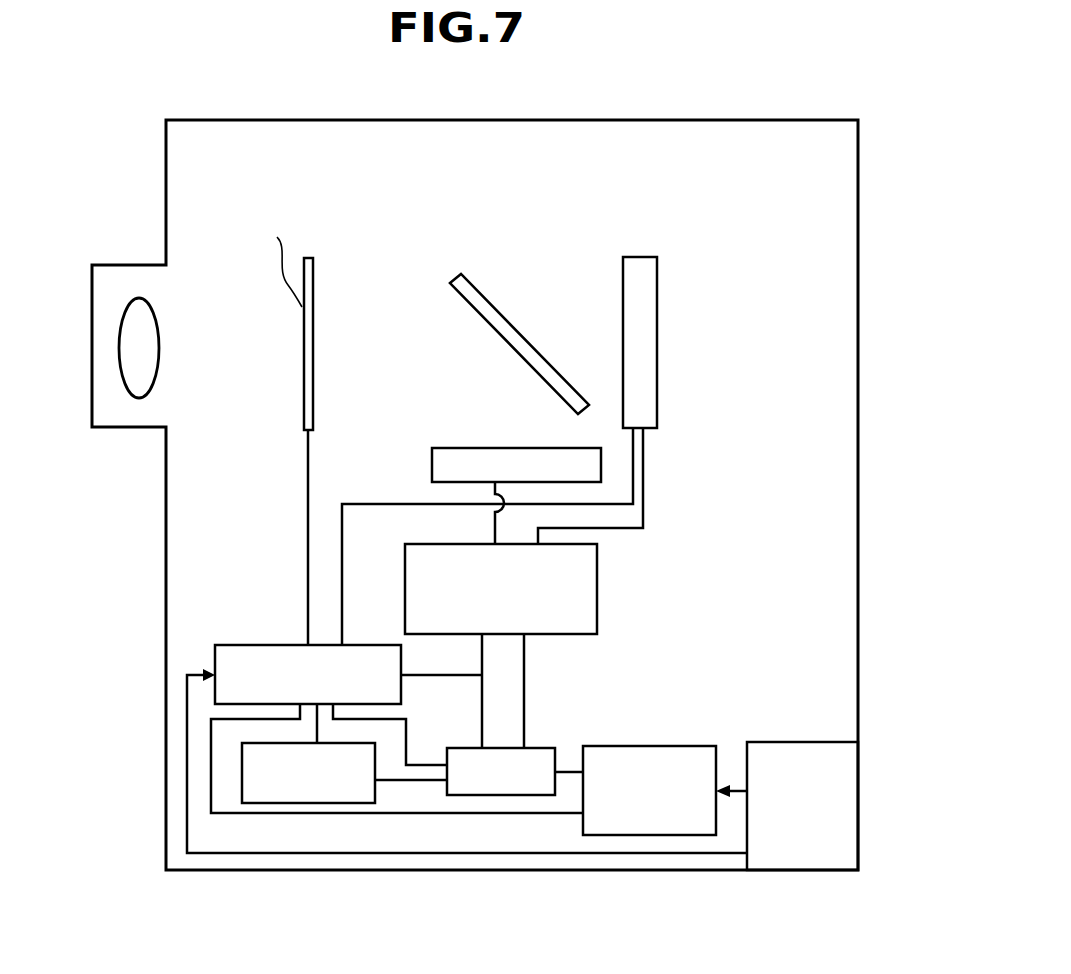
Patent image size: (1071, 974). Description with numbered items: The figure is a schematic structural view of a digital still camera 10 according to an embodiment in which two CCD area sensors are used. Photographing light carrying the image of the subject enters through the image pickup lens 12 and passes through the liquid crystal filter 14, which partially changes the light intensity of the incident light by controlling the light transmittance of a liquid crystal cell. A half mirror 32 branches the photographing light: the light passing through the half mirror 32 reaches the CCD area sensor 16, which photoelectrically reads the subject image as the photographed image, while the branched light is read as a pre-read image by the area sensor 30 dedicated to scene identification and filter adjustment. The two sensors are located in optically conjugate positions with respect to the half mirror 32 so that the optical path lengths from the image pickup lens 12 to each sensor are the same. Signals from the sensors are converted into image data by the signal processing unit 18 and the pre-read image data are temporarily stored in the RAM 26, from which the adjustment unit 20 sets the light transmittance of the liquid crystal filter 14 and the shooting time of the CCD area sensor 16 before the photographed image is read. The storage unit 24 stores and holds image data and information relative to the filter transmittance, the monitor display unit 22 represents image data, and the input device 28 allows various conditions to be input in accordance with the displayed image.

The digital camera 10 is at (134, 160).
The image pickup lens 12 is at (126, 299).
The liquid crystal filter 14 is at (313, 262).
The CCD area sensor 16 is at (657, 288).
The signal processing unit 18 is at (600, 587).
The adjustment unit 20 is at (259, 645).
The monitor display unit 22 is at (667, 745).
The storage unit 24 is at (288, 803).
The RAM 26 is at (495, 795).
The input device 28 is at (797, 742).
The area sensor 30 is at (450, 453).
The half mirror 32 is at (493, 312).